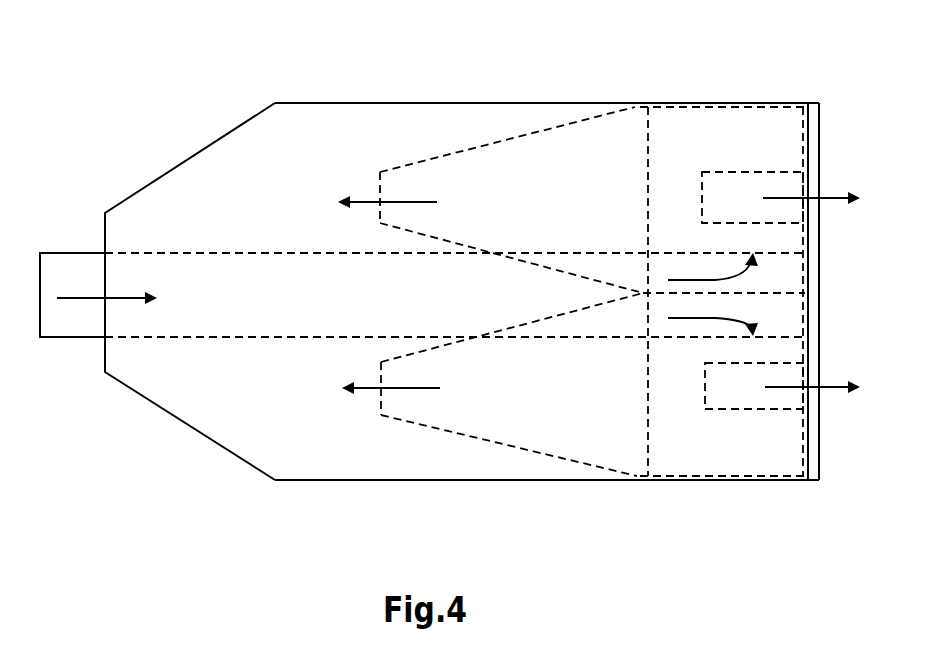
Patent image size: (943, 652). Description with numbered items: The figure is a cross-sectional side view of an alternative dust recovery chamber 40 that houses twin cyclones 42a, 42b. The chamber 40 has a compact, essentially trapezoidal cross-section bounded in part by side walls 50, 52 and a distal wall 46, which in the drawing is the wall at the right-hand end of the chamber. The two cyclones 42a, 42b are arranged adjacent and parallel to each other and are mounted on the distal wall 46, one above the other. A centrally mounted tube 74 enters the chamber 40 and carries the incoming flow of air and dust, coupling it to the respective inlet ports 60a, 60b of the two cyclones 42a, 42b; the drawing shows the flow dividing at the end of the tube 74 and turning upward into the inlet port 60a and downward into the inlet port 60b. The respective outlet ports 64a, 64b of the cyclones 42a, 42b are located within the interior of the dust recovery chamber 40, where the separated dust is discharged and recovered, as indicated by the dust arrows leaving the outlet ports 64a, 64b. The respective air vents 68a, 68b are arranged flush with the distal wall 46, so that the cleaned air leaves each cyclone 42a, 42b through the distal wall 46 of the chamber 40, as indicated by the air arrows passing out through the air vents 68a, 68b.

The dust recovery chamber 40 is at (328, 130).
The cyclone 42a is at (567, 167).
The cyclone 42b is at (543, 402).
The distal wall 46 is at (819, 130).
The side wall 50 is at (453, 481).
The side wall 52 is at (528, 103).
The inlet port 60a is at (780, 263).
The inlet port 60b is at (780, 322).
The outlet port 64a is at (380, 190).
The outlet port 64b is at (380, 402).
The air vent 68a is at (803, 187).
The air vent 68b is at (802, 395).
The centrally mounted tube 74 is at (220, 253).